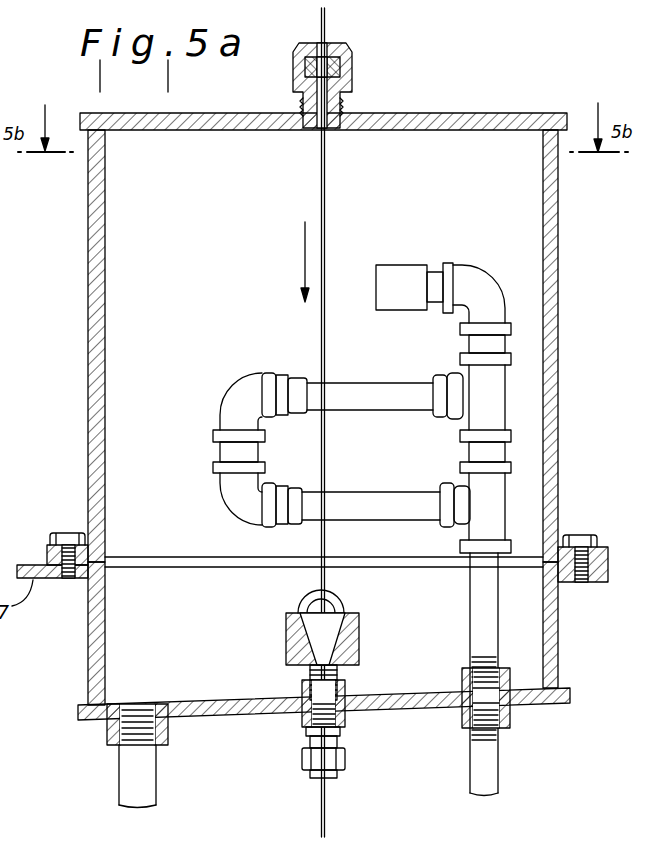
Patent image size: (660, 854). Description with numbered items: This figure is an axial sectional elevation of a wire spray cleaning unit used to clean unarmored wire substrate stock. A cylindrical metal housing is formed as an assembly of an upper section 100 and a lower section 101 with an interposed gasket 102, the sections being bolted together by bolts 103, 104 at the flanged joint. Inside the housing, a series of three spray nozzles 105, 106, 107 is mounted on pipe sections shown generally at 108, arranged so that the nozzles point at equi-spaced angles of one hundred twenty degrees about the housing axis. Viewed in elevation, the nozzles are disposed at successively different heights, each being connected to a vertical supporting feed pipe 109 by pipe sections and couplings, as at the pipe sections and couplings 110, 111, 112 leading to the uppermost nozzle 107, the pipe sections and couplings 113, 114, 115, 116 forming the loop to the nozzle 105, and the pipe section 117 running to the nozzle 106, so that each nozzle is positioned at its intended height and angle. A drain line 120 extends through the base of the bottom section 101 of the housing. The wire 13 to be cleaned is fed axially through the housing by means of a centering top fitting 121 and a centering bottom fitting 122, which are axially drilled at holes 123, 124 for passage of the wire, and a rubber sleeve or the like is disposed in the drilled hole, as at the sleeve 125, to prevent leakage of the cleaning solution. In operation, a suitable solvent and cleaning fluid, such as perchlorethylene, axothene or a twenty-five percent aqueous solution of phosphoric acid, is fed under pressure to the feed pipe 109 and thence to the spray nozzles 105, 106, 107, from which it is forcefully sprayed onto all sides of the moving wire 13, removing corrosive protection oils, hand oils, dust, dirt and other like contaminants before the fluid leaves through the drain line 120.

The wire 13 is at (326, 174).
The upper section 100 is at (582, 311).
The lower section 101 is at (558, 657).
The gasket 102 is at (606, 565).
The bolt 103 is at (582, 535).
The bolt 104 is at (68, 540).
The spray nozzle 105 is at (285, 527).
The spray nozzle 106 is at (283, 380).
The spray nozzle 107 is at (392, 275).
The pipe sections 108 is at (418, 461).
The vertical supporting feed pipe 109 is at (478, 622).
The pipe section or coupling 110 is at (478, 345).
The pipe section or coupling 111 is at (437, 275).
The pipe section or coupling 112 is at (482, 285).
The pipe section or coupling 113 is at (362, 512).
The pipe section or coupling 114 is at (235, 452).
The pipe section or coupling 115 is at (235, 505).
The pipe section or coupling 116 is at (232, 398).
The pipe section or coupling 117 is at (383, 385).
The drain line 120 is at (145, 790).
The top fitting 121 is at (352, 77).
The bottom fitting 122 is at (345, 762).
The axial hole 123 is at (326, 45).
The axial hole 124 is at (342, 612).
The rubber sleeve 125 is at (310, 672).